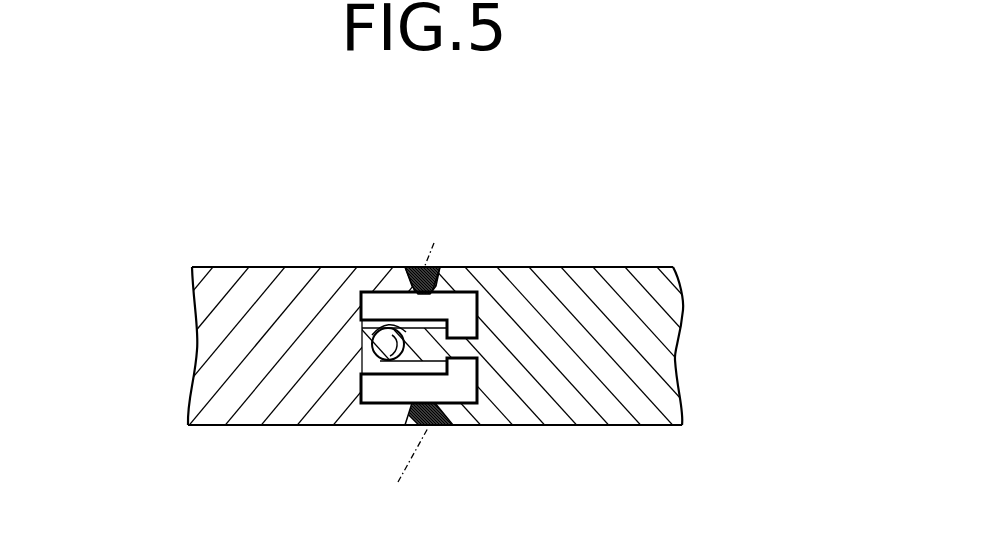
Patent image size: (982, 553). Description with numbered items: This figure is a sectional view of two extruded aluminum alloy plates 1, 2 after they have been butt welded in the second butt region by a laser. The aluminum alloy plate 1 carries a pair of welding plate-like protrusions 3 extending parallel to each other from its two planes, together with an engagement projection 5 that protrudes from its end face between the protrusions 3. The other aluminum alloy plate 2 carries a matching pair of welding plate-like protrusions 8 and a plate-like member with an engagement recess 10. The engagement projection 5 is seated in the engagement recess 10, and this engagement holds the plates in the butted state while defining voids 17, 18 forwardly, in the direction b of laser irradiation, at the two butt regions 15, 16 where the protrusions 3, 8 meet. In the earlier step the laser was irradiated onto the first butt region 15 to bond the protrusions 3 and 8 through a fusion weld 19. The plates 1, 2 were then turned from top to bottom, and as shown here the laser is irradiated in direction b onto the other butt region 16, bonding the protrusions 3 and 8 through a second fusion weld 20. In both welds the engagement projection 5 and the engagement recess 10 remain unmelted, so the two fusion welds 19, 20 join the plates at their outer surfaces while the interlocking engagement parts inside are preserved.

The aluminum alloy plate 1 is at (697, 318).
The aluminum alloy plate 2 is at (183, 308).
The welding plate-like protrusions 3 is at (452, 267).
The engagement projection 5 is at (375, 329).
The welding plate-like protrusions 8 is at (390, 267).
The engagement recess 10 is at (373, 350).
The butt region 15 is at (404, 477).
The butt region 16 is at (437, 258).
The void 17 is at (418, 387).
The void 18 is at (425, 305).
The fusion weld 19 is at (433, 428).
The fusion weld 20 is at (412, 267).
The direction of irradiation of the laser beam b is at (424, 208).